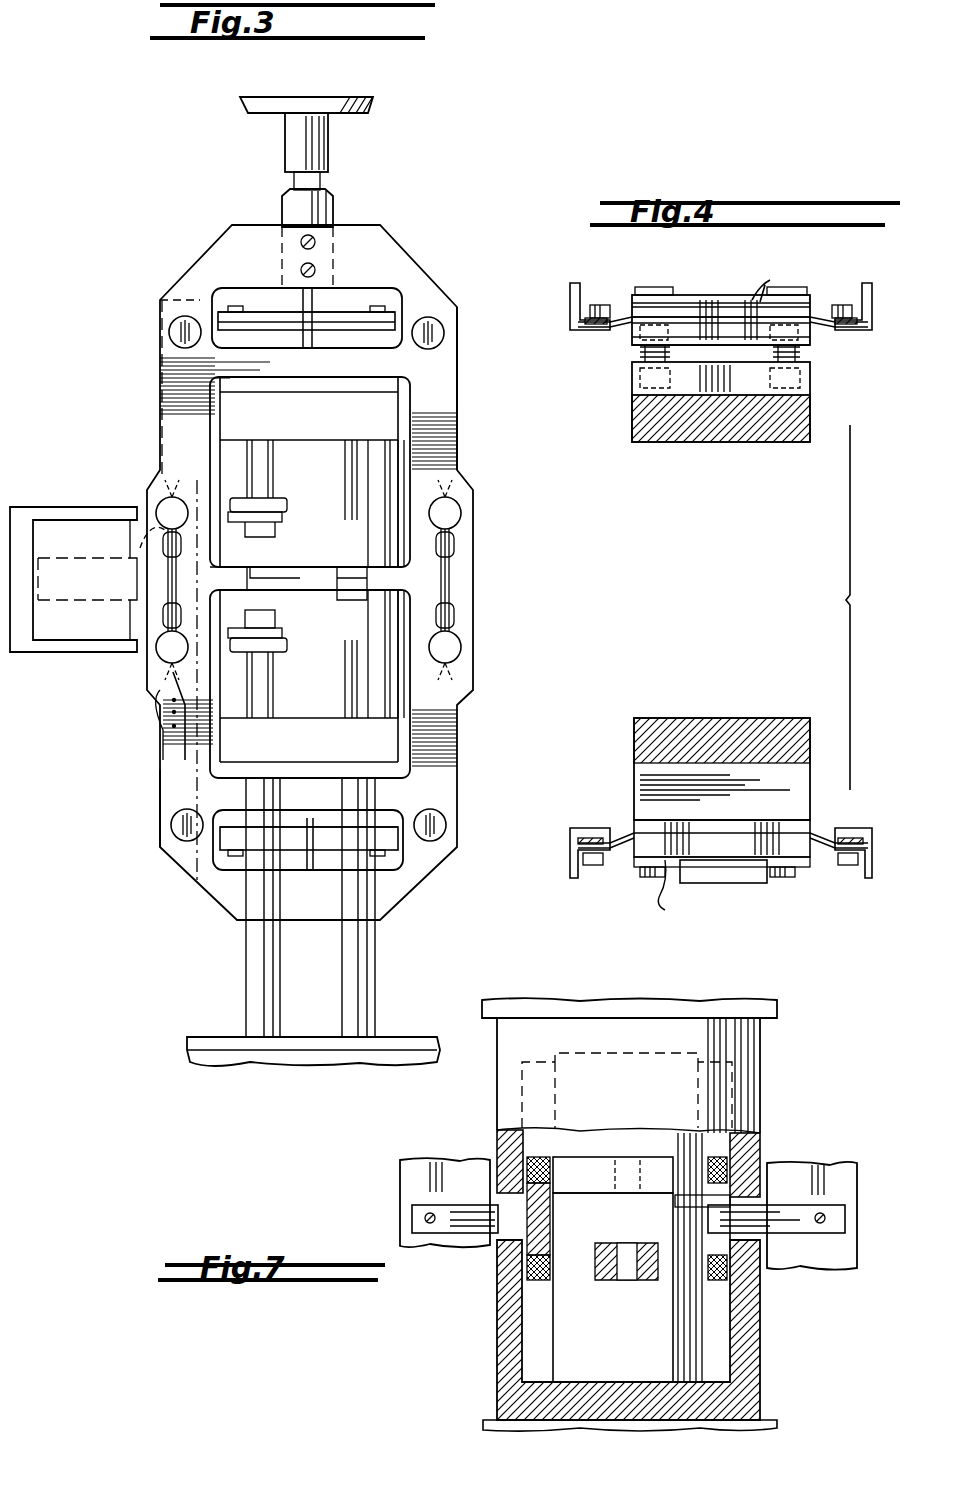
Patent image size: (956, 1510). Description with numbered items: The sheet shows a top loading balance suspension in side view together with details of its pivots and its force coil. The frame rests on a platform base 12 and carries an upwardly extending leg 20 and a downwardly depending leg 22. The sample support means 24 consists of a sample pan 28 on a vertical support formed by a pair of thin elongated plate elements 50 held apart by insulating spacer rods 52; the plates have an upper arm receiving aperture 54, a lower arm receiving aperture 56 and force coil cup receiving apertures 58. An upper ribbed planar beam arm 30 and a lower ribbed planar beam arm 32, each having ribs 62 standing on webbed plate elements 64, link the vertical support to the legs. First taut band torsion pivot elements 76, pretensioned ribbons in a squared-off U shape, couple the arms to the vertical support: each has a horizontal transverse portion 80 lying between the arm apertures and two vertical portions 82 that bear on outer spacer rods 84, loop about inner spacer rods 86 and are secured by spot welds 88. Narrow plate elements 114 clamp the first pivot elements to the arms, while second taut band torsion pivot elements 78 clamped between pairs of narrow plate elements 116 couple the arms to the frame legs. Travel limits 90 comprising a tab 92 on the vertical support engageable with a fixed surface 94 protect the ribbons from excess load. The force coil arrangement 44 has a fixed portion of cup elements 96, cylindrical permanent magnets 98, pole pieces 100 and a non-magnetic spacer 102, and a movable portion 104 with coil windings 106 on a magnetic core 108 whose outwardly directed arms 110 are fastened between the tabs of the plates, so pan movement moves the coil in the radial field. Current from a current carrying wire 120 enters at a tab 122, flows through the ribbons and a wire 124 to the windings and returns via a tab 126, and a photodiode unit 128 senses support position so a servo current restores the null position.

In FIG. 3, the platform base 12 is at (398, 1037).
In FIG. 4, the upwardly extending leg 20 is at (812, 376).
In FIG. 4, the downwardly depending leg 22 is at (633, 790).
In FIG. 3, the sample support means 24 is at (447, 271).
In FIG. 3, the sample pan 28 is at (368, 112).
In FIG. 4, the upper ribbed planar beam arm 30 is at (740, 275).
In FIG. 4, the lower ribbed planar beam arm 32 is at (762, 897).
In FIG. 3, the force coil arrangement 44 is at (421, 704).
In FIG. 7, the force coil arrangement 44 is at (771, 1148).
In FIG. 3, the thin elongated plate elements 50 is at (458, 304).
In FIG. 7, the thin elongated plate elements 50 is at (838, 1163).
In FIG. 3, the insulating spacer rods 52 is at (168, 512).
In FIG. 3, the upper arm receiving aperture 54 is at (212, 290).
In FIG. 3, the lower arm receiving aperture 56 is at (228, 868).
In FIG. 3, the force coil cup receiving apertures 58 is at (410, 384).
In FIG. 7, the force coil cup receiving apertures 58 is at (755, 1290).
In FIG. 3, the ribs 62 is at (302, 312).
In FIG. 3, the webbed plate elements 64 is at (396, 325).
In FIG. 3, the first taut band torsion pivot elements 76 is at (460, 357).
In FIG. 4, the second taut band torsion pivot elements 78 is at (615, 318).
In FIG. 3, the transverse portion 80 is at (165, 303).
In FIG. 3, the vertical portions 82 is at (455, 423).
In FIG. 3, the outer spacer rods 84 is at (172, 835).
In FIG. 3, the inner spacer rods 86 is at (170, 662).
In FIG. 3, the spot welds 88 is at (180, 710).
In FIG. 3, the travel limits 90 is at (232, 567).
In FIG. 3, the tab 92 is at (260, 578).
In FIG. 3, the fixed surface 94 is at (352, 592).
In FIG. 7, the cup elements 96 is at (497, 1095).
In FIG. 7, the cylindrical permanent magnets 98 is at (497, 1135).
In FIG. 7, the pole pieces 100 is at (575, 1272).
In FIG. 7, the non-magnetic spacer 102 is at (645, 1238).
In FIG. 7, the movable portion 104 is at (720, 1289).
In FIG. 7, the coil windings 106 is at (540, 1270).
In FIG. 7, the magnetic core 108 is at (527, 1262).
In FIG. 7, the outwardly directed arms 110 is at (480, 1235).
In FIG. 3, the narrow plate elements 114 is at (340, 310).
In FIG. 4, the narrow plate elements 116 is at (815, 318).
In FIG. 4, the current carrying wire 120 is at (772, 278).
In FIG. 4, the tab 122 is at (765, 285).
In FIG. 3, the wire 124 is at (165, 457).
In FIG. 4, the tab 126 is at (665, 880).
In FIG. 3, the photodiode unit 128 is at (58, 630).